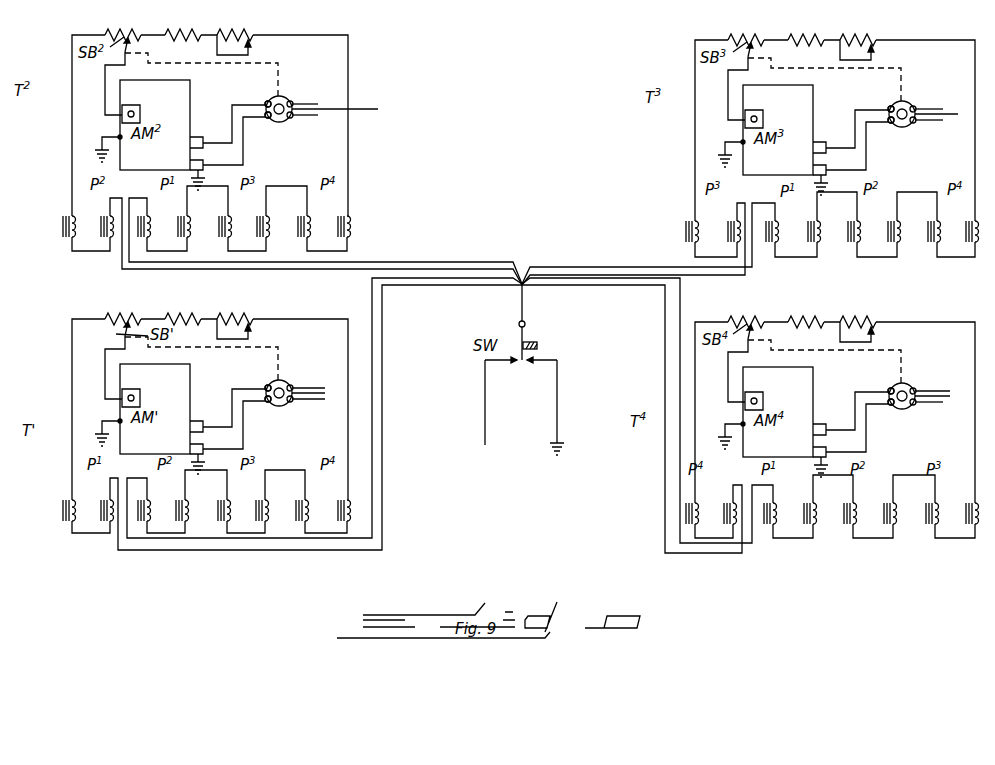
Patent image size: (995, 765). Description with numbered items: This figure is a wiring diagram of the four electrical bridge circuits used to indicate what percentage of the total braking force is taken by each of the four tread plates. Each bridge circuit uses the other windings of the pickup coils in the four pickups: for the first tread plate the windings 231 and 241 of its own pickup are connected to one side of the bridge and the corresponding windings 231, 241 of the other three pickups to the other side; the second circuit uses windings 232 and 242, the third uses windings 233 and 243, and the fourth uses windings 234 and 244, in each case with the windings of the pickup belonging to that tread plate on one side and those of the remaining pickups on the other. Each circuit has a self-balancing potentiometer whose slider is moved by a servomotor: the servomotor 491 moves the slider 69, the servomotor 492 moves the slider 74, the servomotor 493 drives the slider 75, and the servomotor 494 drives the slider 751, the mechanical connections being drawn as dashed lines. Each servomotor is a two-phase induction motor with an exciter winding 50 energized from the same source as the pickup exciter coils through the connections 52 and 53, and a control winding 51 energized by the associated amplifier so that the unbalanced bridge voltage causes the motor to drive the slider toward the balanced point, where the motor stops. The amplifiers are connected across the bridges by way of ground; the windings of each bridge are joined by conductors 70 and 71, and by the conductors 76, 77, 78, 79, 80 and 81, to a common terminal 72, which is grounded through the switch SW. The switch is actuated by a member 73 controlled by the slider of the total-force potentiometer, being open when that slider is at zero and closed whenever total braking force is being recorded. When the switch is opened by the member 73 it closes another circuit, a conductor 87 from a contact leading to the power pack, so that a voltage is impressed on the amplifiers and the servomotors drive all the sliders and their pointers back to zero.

The winding of pickup coil 23 232 is at (74, 240).
The winding of pickup coil 24 242 is at (112, 240).
The winding of pickup coil 23 231 is at (188, 538).
The winding of pickup coil 24 241 is at (233, 538).
The winding of pickup coil 23 233 is at (805, 258).
The winding of pickup coil 24 243 is at (813, 244).
The winding of pickup coil 23 234 is at (809, 544).
The winding of pickup coil 24 244 is at (858, 544).
The servomotor 491 is at (296, 381).
The servomotor 492 is at (289, 98).
The servomotor 493 is at (918, 101).
The servomotor 494 is at (917, 385).
The exciter winding 50 is at (298, 117).
The control winding 51 is at (265, 103).
The connection from power source 52 is at (318, 115).
The connection from power source 53 is at (318, 104).
The slider 69 is at (85, 333).
The slider 74 is at (128, 50).
The slider 75 is at (774, 53).
The slider 751 is at (773, 334).
The conductor 70 is at (374, 426).
The conductor 71 is at (384, 398).
The common terminal 72 is at (518, 291).
The member 73 is at (540, 345).
The conductor 76 is at (382, 262).
The conductor 77 is at (412, 268).
The conductor 78 is at (557, 266).
The conductor 79 is at (592, 273).
The conductor 80 is at (600, 279).
The conductor 81 is at (638, 286).
The conductor 87 is at (484, 404).